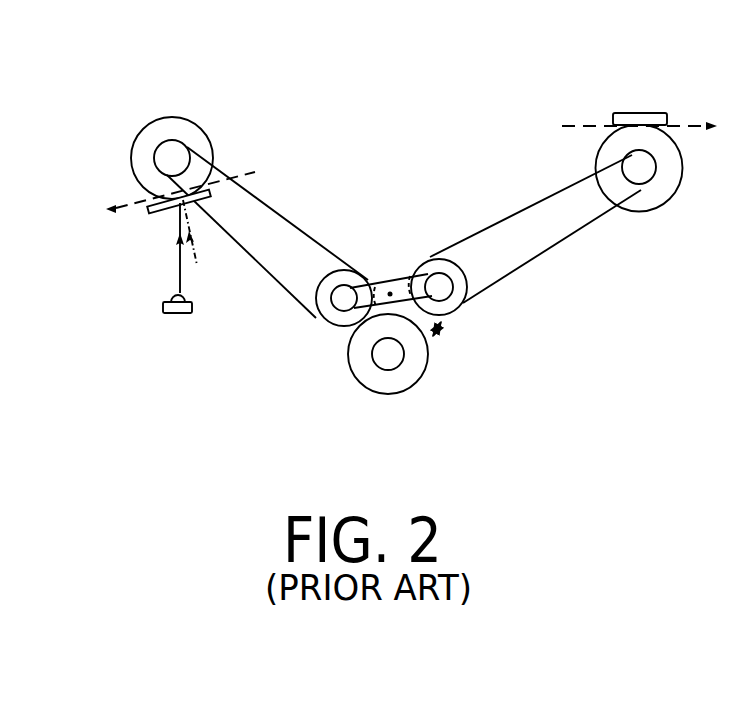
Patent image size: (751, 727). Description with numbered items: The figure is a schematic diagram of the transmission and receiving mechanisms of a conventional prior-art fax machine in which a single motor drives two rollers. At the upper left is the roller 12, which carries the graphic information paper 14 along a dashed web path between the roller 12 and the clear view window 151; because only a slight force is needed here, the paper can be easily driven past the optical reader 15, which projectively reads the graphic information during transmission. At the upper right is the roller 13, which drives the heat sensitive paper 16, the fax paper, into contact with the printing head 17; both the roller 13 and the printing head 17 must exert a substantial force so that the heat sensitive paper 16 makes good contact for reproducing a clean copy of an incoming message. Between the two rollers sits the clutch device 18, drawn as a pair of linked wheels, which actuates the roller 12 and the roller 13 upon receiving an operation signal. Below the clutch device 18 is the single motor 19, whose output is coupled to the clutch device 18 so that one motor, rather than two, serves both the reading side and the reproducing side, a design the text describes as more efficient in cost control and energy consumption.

The roller 12 is at (178, 131).
The roller 13 is at (653, 205).
The graphic information paper 14 is at (250, 172).
The optical reader 15 is at (157, 230).
The clear view window 151 is at (155, 208).
The heat sensitive paper 16 is at (594, 121).
The printing head 17 is at (642, 113).
The clutch device 18 is at (360, 265).
The motor 19 is at (403, 373).